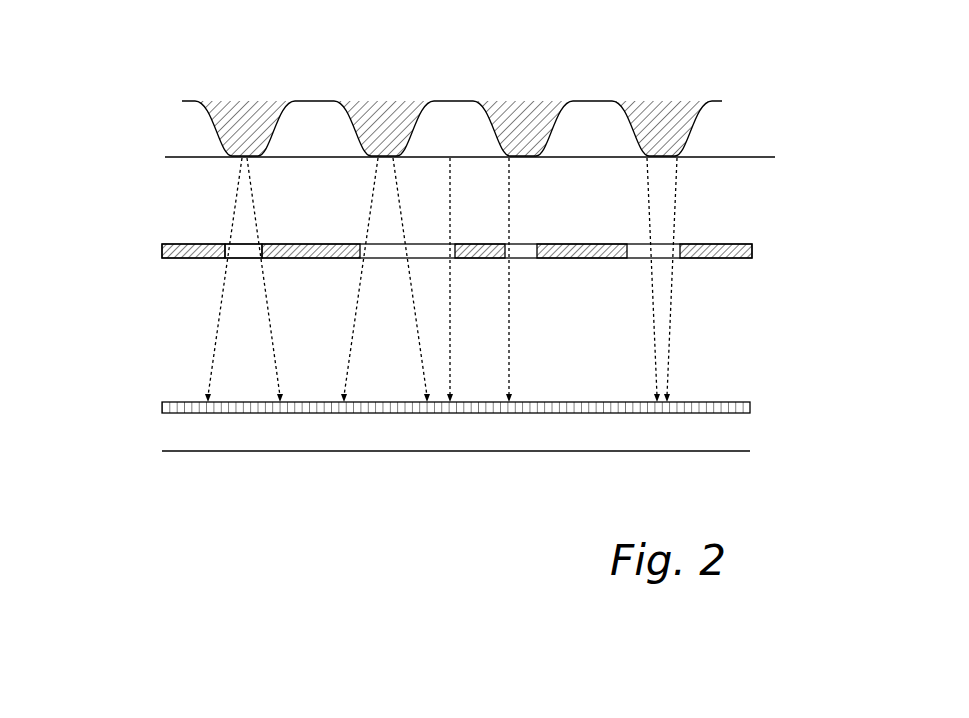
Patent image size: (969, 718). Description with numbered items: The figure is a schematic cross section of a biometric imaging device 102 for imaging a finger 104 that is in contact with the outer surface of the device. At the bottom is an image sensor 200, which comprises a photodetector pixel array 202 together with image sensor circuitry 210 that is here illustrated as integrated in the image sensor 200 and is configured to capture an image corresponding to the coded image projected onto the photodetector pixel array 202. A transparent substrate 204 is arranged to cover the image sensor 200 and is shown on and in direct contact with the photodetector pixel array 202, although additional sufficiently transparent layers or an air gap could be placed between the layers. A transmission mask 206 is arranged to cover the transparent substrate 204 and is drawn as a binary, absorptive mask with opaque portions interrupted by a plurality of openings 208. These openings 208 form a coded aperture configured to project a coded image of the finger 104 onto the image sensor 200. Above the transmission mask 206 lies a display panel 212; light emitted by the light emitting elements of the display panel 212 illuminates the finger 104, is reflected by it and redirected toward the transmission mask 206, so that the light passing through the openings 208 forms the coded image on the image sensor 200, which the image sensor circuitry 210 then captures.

The biometric imaging device 102 is at (118, 220).
The finger 104 is at (679, 108).
The image sensor 200 is at (150, 402).
The photodetector pixel array 202 is at (753, 407).
The transparent substrate 204 is at (735, 307).
The transmission mask 206 is at (752, 247).
The openings 208 is at (242, 250).
The image sensor circuitry 210 is at (738, 434).
The display panel 212 is at (726, 198).